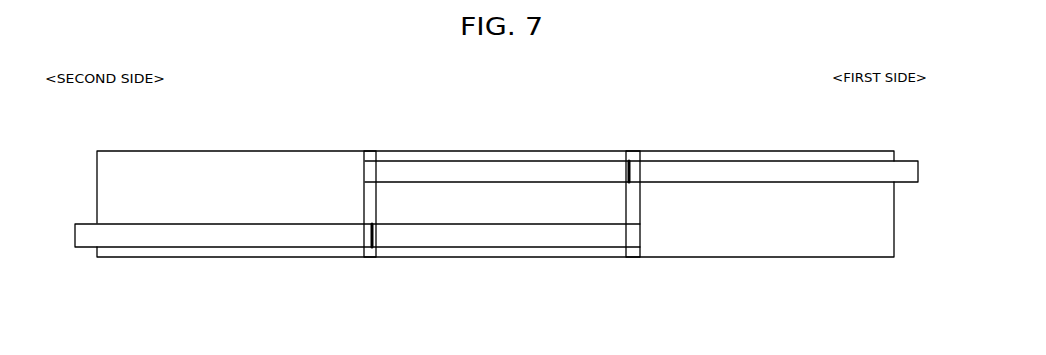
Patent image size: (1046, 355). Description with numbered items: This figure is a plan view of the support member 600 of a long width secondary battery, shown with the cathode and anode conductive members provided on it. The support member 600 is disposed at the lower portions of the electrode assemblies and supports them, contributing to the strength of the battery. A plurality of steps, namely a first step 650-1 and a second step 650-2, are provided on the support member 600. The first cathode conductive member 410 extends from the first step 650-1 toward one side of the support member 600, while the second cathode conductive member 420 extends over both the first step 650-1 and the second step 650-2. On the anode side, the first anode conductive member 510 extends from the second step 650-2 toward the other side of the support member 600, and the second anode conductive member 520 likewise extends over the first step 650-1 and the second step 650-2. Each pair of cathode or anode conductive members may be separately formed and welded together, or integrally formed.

The support member 600 is at (858, 231).
The second anode conductive member 520 is at (565, 163).
The first anode conductive member 510 is at (833, 162).
The first cathode conductive member 410 is at (258, 232).
The second cathode conductive member 420 is at (560, 233).
The first step 650-1 is at (375, 213).
The second step 650-2 is at (630, 210).